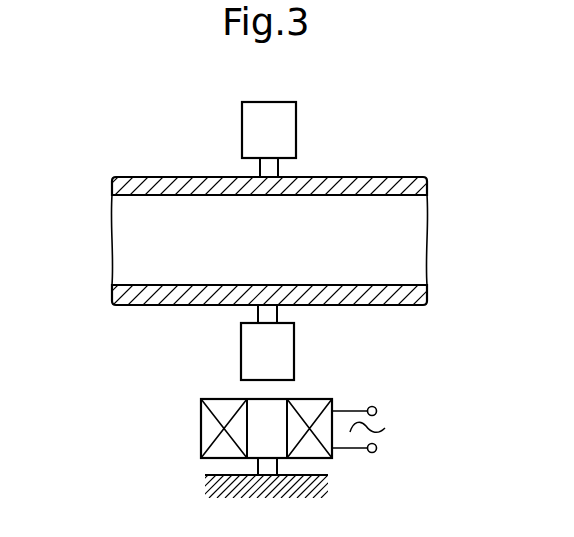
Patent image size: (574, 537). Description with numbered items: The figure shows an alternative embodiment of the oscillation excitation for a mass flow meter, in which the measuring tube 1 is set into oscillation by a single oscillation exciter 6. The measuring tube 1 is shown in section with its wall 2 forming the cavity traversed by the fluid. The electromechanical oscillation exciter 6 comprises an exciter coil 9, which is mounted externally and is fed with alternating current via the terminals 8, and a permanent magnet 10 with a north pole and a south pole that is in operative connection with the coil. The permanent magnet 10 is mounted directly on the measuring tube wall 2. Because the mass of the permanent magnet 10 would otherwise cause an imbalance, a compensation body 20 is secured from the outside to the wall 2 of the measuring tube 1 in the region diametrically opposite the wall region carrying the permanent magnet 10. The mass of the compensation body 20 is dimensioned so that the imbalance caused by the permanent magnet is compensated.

The measuring tube 1 is at (353, 268).
The measuring tube wall 2 is at (410, 186).
The oscillation exciter 6 is at (222, 352).
The terminals 8 is at (377, 444).
The exciter coil 9 is at (201, 433).
The permanent magnet 10 is at (294, 337).
The compensation body 20 is at (296, 127).